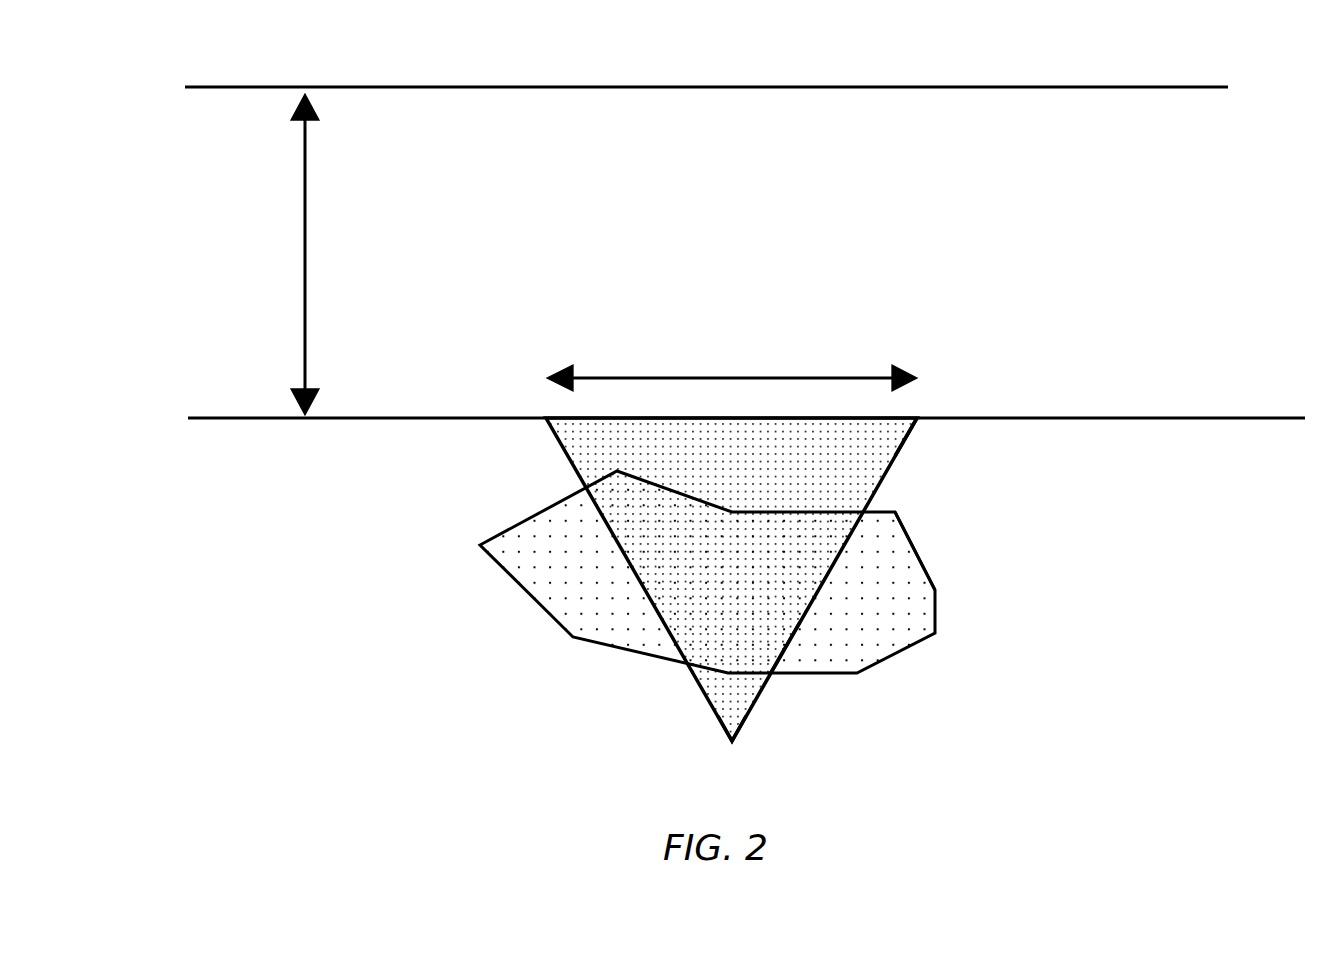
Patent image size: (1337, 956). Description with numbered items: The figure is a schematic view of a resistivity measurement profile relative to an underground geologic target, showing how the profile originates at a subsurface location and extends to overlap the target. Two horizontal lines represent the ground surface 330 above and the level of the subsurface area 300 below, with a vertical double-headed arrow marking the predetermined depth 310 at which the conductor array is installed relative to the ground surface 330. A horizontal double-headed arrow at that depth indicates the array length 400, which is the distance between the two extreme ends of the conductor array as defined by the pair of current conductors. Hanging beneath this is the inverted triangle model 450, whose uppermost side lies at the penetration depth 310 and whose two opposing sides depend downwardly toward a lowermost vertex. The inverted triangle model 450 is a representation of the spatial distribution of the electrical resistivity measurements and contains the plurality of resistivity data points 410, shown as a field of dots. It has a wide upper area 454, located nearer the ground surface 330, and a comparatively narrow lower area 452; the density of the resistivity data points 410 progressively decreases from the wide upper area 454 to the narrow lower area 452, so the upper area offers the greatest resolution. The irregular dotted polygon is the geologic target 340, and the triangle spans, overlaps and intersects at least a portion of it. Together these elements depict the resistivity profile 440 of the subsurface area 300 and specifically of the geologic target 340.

The subsurface area 300 is at (1226, 185).
The depth 310 is at (305, 229).
The ground surface 330 is at (576, 87).
The geologic target 340 is at (887, 583).
The array length 400 is at (833, 378).
The resistivity data points 410 is at (732, 692).
The resistivity profile 440 is at (633, 702).
The inverted triangle model 450 is at (888, 475).
The narrow lower area 452 is at (785, 687).
The wide upper area 454 is at (918, 438).